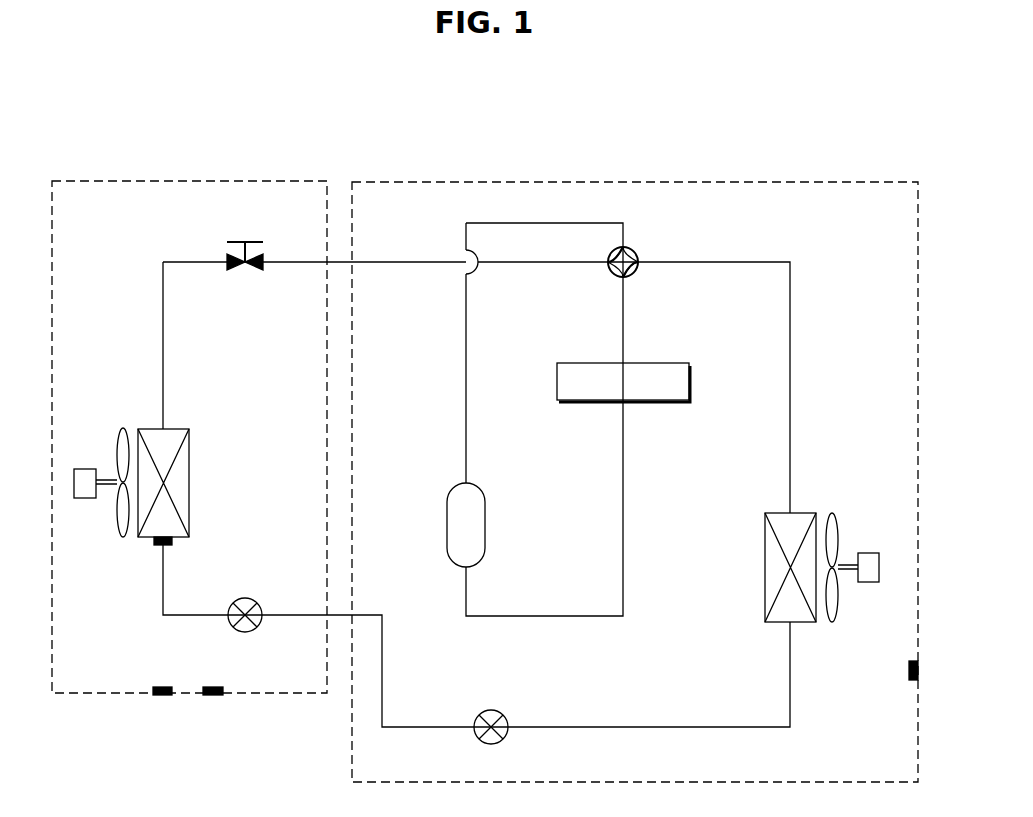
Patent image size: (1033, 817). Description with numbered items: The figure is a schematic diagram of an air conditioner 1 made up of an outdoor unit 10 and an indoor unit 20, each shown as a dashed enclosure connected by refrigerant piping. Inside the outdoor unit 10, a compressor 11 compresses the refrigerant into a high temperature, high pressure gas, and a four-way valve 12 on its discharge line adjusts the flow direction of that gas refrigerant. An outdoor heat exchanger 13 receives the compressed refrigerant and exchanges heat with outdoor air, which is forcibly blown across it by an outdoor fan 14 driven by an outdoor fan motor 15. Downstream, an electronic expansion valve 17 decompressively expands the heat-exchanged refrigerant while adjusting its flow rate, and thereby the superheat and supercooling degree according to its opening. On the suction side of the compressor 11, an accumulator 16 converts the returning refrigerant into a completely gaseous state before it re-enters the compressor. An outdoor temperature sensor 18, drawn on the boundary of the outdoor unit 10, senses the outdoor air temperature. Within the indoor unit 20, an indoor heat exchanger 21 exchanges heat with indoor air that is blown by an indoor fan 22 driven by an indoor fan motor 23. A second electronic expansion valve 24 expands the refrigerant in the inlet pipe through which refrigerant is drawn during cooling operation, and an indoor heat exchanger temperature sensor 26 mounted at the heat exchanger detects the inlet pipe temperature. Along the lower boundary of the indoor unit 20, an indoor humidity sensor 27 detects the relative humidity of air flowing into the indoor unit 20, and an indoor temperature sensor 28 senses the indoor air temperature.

The air conditioner 1 is at (90, 130).
The outdoor unit 10 is at (877, 182).
The compressor 11 is at (652, 363).
The four-way valve 12 is at (634, 252).
The outdoor heat exchanger 13 is at (776, 513).
The outdoor fan 14 is at (832, 513).
The outdoor fan motor 15 is at (868, 553).
The accumulator 16 is at (485, 526).
The electronic expansion valve 17 is at (497, 711).
The outdoor temperature sensor 18 is at (909, 670).
The indoor unit 20 is at (300, 181).
The indoor heat exchanger 21 is at (180, 429).
The indoor fan 22 is at (123, 429).
The indoor fan motor 23 is at (86, 469).
The electronic expansion valve 24 is at (250, 598).
The indoor heat exchanger temperature sensor 26 is at (172, 541).
The indoor humidity sensor 27 is at (163, 687).
The indoor temperature sensor 28 is at (213, 687).